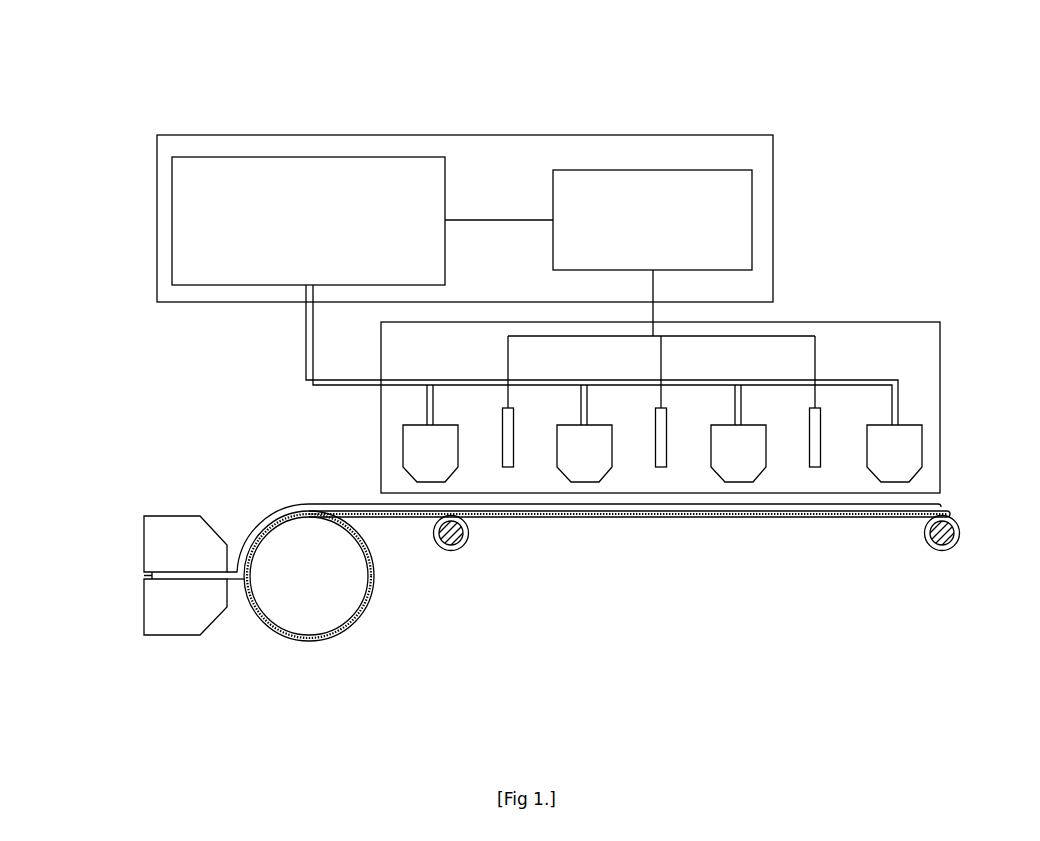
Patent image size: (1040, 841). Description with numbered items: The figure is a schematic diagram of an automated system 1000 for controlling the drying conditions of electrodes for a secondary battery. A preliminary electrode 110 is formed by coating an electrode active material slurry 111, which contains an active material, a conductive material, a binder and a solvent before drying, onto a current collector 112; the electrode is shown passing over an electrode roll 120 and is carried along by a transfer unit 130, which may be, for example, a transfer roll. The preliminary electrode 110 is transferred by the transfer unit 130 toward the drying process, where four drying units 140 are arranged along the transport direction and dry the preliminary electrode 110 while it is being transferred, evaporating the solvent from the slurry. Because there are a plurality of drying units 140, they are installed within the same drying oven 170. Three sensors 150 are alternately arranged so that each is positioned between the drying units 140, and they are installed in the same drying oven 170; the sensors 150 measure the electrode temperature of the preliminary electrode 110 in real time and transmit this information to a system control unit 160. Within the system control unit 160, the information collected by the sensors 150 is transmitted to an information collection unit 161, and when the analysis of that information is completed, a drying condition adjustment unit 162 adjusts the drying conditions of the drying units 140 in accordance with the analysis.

The automated system for drying conditions 1000 is at (217, 66).
The preliminary electrode 110 is at (313, 480).
The electrode active material slurry 111 is at (269, 512).
The current collector 112 is at (397, 518).
The electrode roll 120 is at (342, 632).
The transfer unit 130 is at (460, 553).
The drying unit 140 is at (912, 452).
The sensor 150 is at (817, 430).
The system control unit 160 is at (623, 74).
The information collection unit 161 is at (595, 177).
The drying condition adjustment unit 162 is at (397, 165).
The drying oven 170 is at (933, 349).